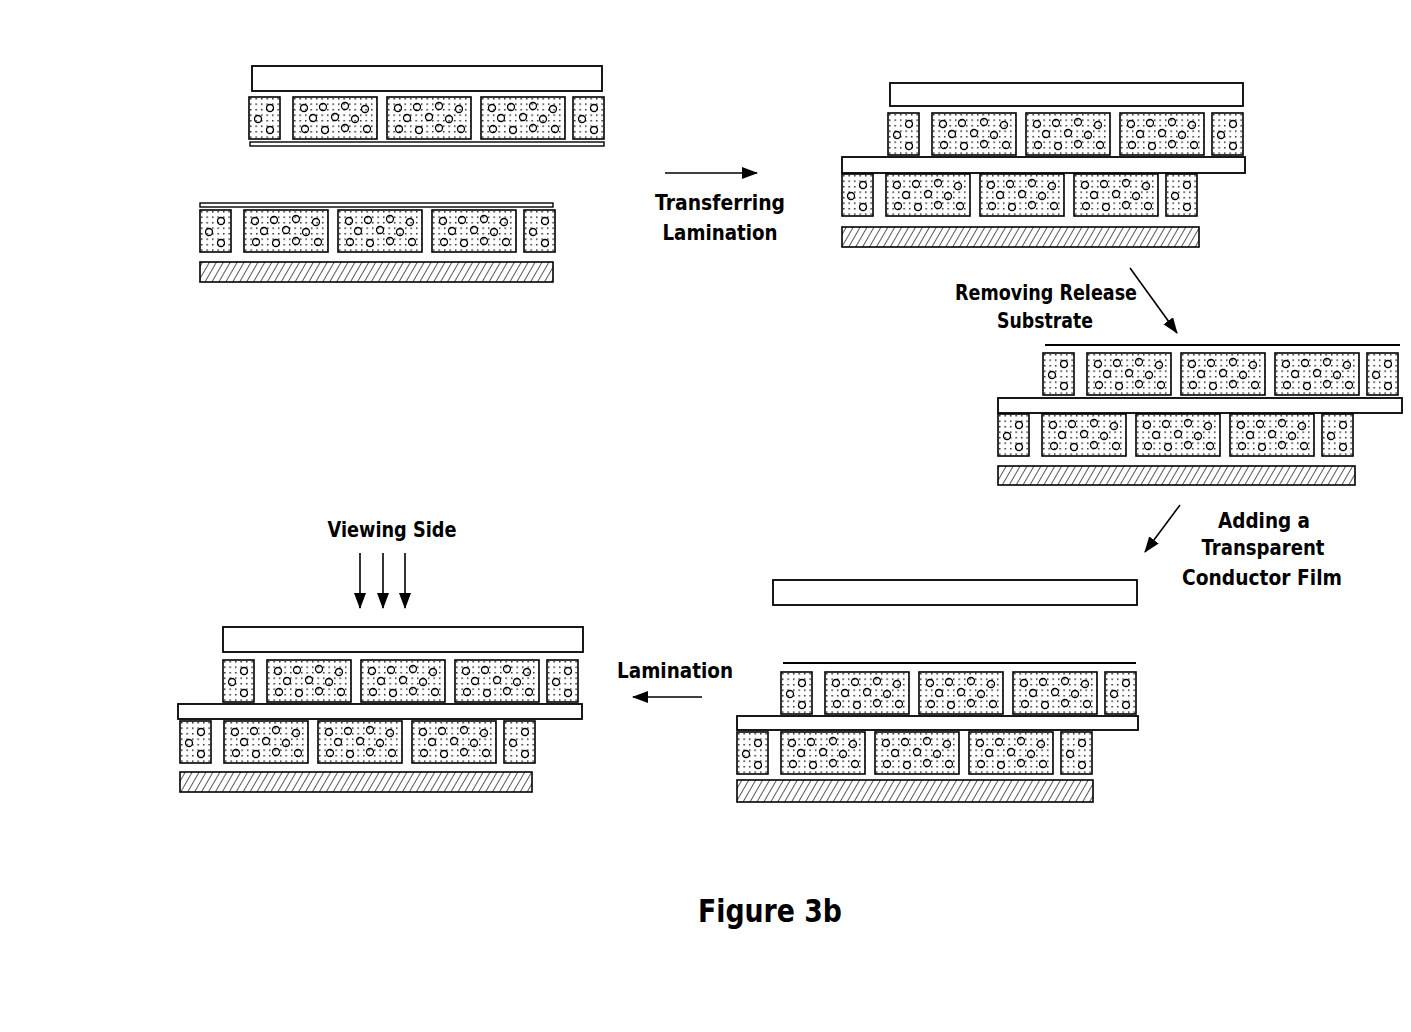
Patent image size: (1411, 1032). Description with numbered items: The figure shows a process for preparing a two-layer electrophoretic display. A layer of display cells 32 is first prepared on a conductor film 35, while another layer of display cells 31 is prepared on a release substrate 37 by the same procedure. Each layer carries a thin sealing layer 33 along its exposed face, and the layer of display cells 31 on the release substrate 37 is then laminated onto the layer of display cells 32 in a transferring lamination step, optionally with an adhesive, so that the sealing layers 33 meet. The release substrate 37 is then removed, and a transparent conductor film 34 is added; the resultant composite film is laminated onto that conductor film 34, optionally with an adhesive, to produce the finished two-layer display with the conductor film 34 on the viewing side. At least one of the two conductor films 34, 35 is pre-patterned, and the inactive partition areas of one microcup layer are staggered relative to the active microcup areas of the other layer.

The layer of display cells 31 is at (615, 108).
The layer of display cells 32 is at (562, 240).
The adhesive/sealing layer 33 is at (255, 143).
The conductor film 34 is at (1137, 597).
The conductor film 35 is at (340, 282).
The release substrate 37 is at (288, 77).